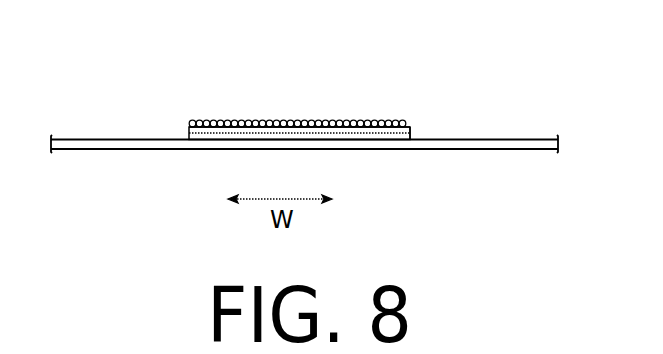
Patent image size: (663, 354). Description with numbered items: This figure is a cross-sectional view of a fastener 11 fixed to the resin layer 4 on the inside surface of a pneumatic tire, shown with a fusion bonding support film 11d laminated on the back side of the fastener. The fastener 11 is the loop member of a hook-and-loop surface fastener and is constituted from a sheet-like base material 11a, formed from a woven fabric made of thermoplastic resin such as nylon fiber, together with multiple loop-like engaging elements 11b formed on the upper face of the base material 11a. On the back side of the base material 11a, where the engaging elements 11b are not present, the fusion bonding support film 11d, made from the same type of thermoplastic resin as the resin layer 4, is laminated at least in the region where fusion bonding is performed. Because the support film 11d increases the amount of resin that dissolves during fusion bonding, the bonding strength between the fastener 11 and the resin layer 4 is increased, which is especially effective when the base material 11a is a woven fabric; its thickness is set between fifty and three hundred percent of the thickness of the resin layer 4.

The resin layer 4 is at (117, 139).
The fastener 11 is at (306, 119).
The base material 11a is at (397, 121).
The engaging elements 11b is at (253, 120).
The fusion bonding support film 11d is at (398, 131).